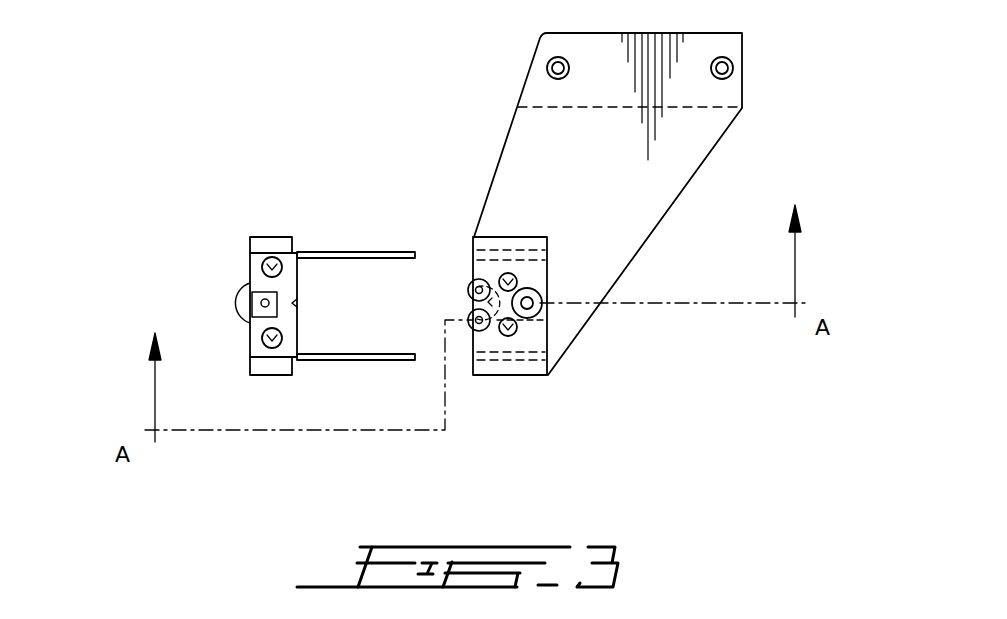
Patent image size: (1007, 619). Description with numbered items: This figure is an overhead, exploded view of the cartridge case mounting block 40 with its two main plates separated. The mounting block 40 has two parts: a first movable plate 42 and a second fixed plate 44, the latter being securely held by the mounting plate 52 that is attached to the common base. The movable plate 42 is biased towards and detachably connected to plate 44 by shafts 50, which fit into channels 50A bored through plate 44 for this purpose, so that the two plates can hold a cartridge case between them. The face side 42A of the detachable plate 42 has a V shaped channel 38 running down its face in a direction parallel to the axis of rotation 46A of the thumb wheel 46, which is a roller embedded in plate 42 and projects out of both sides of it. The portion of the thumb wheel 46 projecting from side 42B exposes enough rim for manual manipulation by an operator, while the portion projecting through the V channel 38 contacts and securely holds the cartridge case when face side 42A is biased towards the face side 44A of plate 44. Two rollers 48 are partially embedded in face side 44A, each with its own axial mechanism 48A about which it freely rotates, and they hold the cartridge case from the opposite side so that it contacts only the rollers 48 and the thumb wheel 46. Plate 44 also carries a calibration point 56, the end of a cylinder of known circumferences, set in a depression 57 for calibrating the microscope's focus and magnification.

The V shaped channel 38 is at (297, 305).
The cartridge case mounting block 40 is at (358, 137).
The movable plate 42 is at (272, 245).
The face side of plate 42 42A is at (300, 275).
The side of plate 42 42B is at (250, 270).
The fixed plate 44 is at (525, 367).
The face side of plate 44 44A is at (475, 252).
The thumb wheel 46 is at (262, 303).
The axial mechanism of thumb wheel 46A is at (264, 304).
The rollers 48 is at (468, 290).
The axial mechanisms of rollers 48A is at (474, 288).
The shafts 50 is at (358, 250).
The channels 50A is at (548, 250).
The mounting plate 52 is at (692, 155).
The calibration point 56 is at (548, 288).
The depression 57 is at (548, 305).